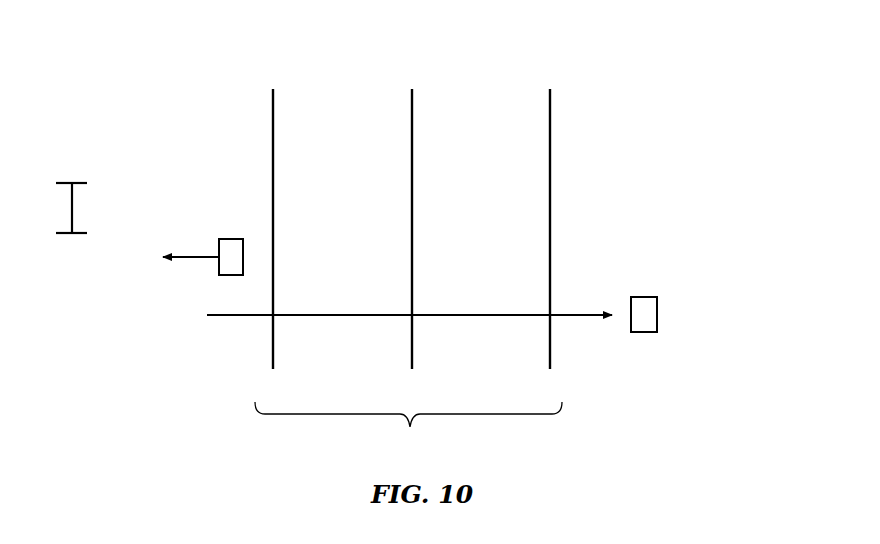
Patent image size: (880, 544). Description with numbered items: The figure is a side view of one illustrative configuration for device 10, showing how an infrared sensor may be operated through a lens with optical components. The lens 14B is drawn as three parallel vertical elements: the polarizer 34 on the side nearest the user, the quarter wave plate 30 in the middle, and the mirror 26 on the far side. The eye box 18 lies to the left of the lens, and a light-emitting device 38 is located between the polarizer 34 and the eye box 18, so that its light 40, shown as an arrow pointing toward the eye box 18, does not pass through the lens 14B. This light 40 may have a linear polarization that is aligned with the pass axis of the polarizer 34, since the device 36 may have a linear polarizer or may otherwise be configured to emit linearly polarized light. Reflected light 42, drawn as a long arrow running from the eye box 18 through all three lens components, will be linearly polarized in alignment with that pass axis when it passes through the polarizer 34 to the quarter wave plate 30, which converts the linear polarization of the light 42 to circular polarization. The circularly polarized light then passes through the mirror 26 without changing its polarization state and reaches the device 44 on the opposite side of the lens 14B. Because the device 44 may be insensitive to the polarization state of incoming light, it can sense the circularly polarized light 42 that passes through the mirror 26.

The device 10 is at (695, 142).
The lens 14B is at (408, 427).
The eye box 18 is at (63, 233).
The mirror 26 is at (550, 112).
The quarter wave plate 30 is at (412, 112).
The polarizer 34 is at (273, 112).
The device 36 is at (235, 224).
The light-emitting device 38 is at (232, 275).
The light 40 is at (190, 257).
The reflected light 42 is at (236, 315).
The device 44 is at (645, 332).